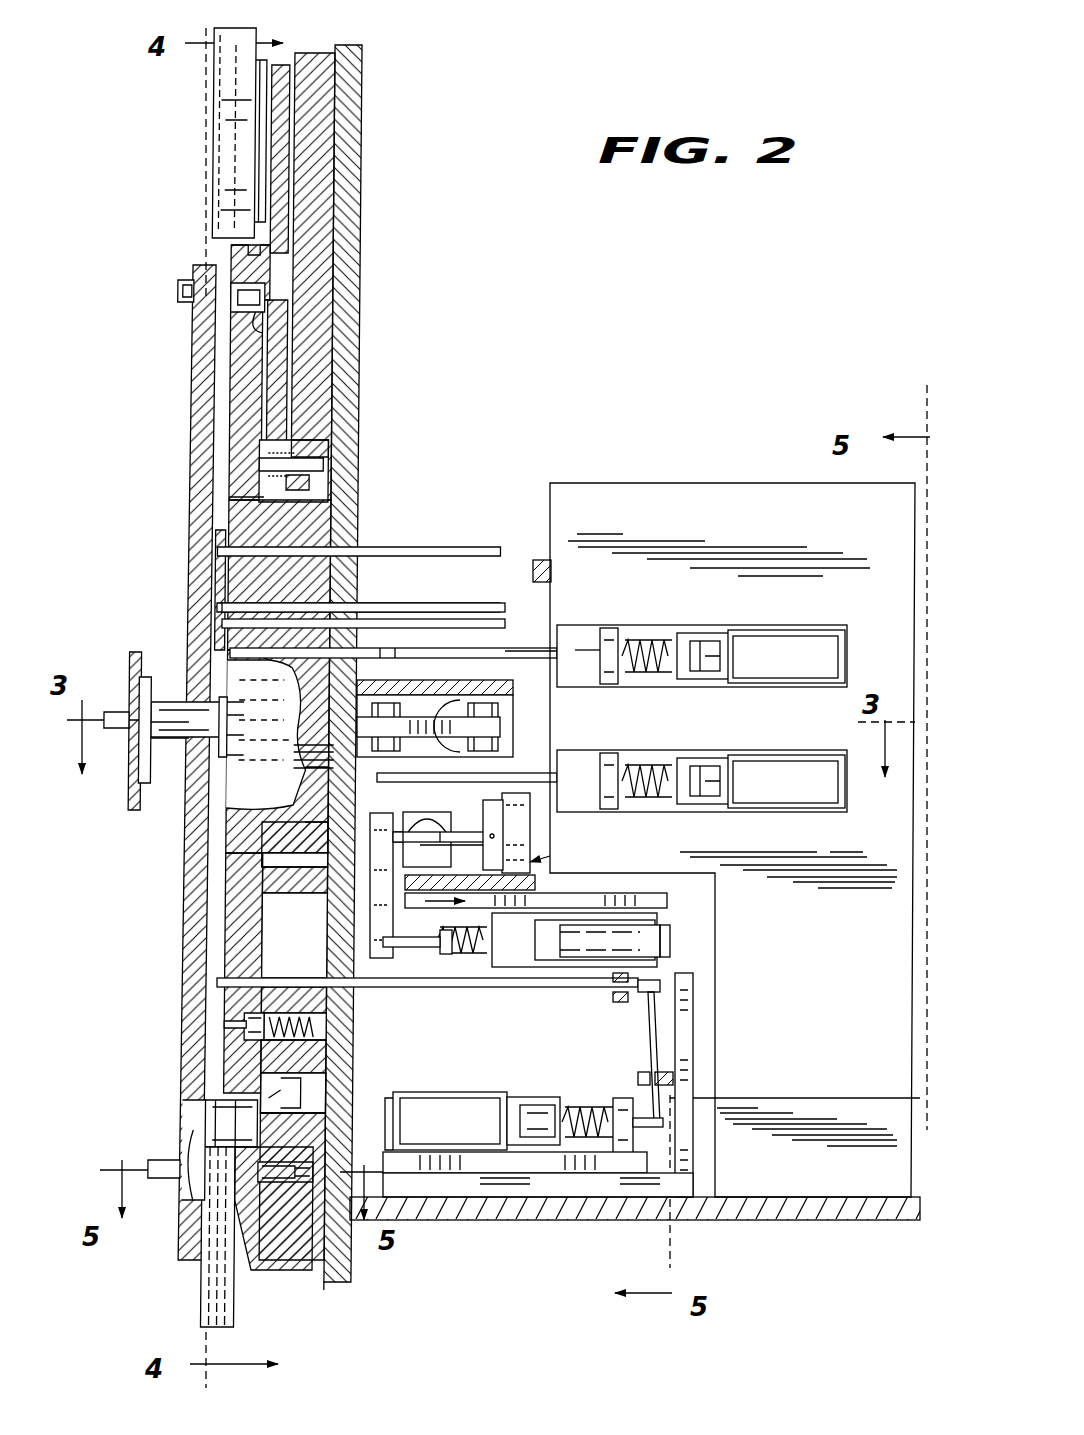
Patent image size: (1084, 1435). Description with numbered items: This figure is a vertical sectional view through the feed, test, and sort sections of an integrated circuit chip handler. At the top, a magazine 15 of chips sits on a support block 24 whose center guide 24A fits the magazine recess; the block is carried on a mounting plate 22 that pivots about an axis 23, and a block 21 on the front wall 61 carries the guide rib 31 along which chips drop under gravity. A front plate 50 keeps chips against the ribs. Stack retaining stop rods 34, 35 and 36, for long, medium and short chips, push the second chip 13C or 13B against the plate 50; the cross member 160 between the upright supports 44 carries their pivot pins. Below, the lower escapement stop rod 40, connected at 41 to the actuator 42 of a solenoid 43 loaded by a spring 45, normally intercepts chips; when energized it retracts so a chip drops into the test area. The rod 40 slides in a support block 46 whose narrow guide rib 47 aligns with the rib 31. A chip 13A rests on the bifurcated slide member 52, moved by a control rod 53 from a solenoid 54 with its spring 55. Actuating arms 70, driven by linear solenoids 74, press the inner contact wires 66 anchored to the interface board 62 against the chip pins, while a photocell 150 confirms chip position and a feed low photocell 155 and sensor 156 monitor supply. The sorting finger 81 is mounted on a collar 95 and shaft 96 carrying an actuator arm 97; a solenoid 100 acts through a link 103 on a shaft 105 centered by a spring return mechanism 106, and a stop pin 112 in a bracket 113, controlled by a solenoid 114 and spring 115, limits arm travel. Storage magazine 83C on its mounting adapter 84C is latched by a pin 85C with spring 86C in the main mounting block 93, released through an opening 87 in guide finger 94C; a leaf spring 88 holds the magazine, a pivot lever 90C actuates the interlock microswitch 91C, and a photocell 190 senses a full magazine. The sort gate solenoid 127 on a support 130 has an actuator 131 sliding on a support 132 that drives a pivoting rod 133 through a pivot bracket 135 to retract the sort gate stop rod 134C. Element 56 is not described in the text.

The magazine 15 is at (232, 150).
The block 21 is at (315, 210).
The chip storage magazine mounting plate 22 is at (282, 108).
The axis 23 is at (330, 470).
The support block member 24 is at (270, 170).
The center guide 24A is at (263, 62).
The guide rib 31 is at (272, 268).
The stack retaining stop rod 34 is at (318, 528).
The stop rod 35 is at (370, 603).
The stop rod 36 is at (486, 619).
The lower escapement stop rod 40 is at (445, 658).
The connection 41 is at (578, 650).
The actuator 42 is at (630, 652).
The solenoid 43 is at (780, 645).
The support 44 is at (628, 515).
The spring 45 is at (622, 680).
The support block 46 is at (270, 690).
The guide rib 47 is at (252, 660).
The front plate 50 is at (200, 408).
The slide member 52 is at (302, 760).
The control rod 53 is at (422, 773).
The solenoid 54 is at (765, 770).
The spring 55 is at (645, 775).
The block 56 is at (258, 400).
The front wall 61 is at (333, 1282).
The interface board 62 is at (137, 790).
The inner contact wire 66 is at (148, 678).
The actuating arm 70 is at (488, 735).
The solenoid 74 is at (512, 710).
The sorting finger 81 is at (232, 940).
The storage magazine 83C is at (238, 1300).
The mounting adapter 84C is at (258, 1220).
The latch pin 85C is at (233, 1025).
The spring 86C is at (325, 1027).
The opening 87 is at (217, 983).
The leaf spring 88 is at (213, 1120).
The pivot lever 90C is at (233, 1070).
The microswitch 91C is at (318, 1090).
The main mounting block 93 is at (330, 1260).
The guide finger 94C is at (233, 995).
The collar 95 is at (370, 870).
The shaft 96 is at (380, 930).
The actuator arm 97 is at (405, 885).
The solenoid 100 is at (492, 850).
The link 103 is at (445, 798).
The shaft 105 is at (520, 820).
The spring return mechanism 106 is at (550, 858).
The stop pin 112 is at (400, 947).
The bracket 113 is at (446, 955).
The solenoid 114 is at (600, 940).
The spring 115 is at (462, 955).
The sort gate solenoid 127 is at (465, 1100).
The support 130 is at (540, 1197).
The actuator 131 is at (650, 1128).
The support 132 is at (622, 1100).
The pivoting rod 133 is at (655, 1030).
The sort gate stop rod 134C is at (596, 1000).
The pivot bracket 135 is at (670, 1078).
The photocell 150 is at (175, 740).
The feed low photocell 155 is at (180, 290).
The sensor 156 is at (265, 325).
The cross member 160 is at (540, 560).
The photocell 190 is at (168, 1195).
The chip 13A is at (228, 760).
The chip 13B is at (225, 605).
The chip 13C is at (222, 548).